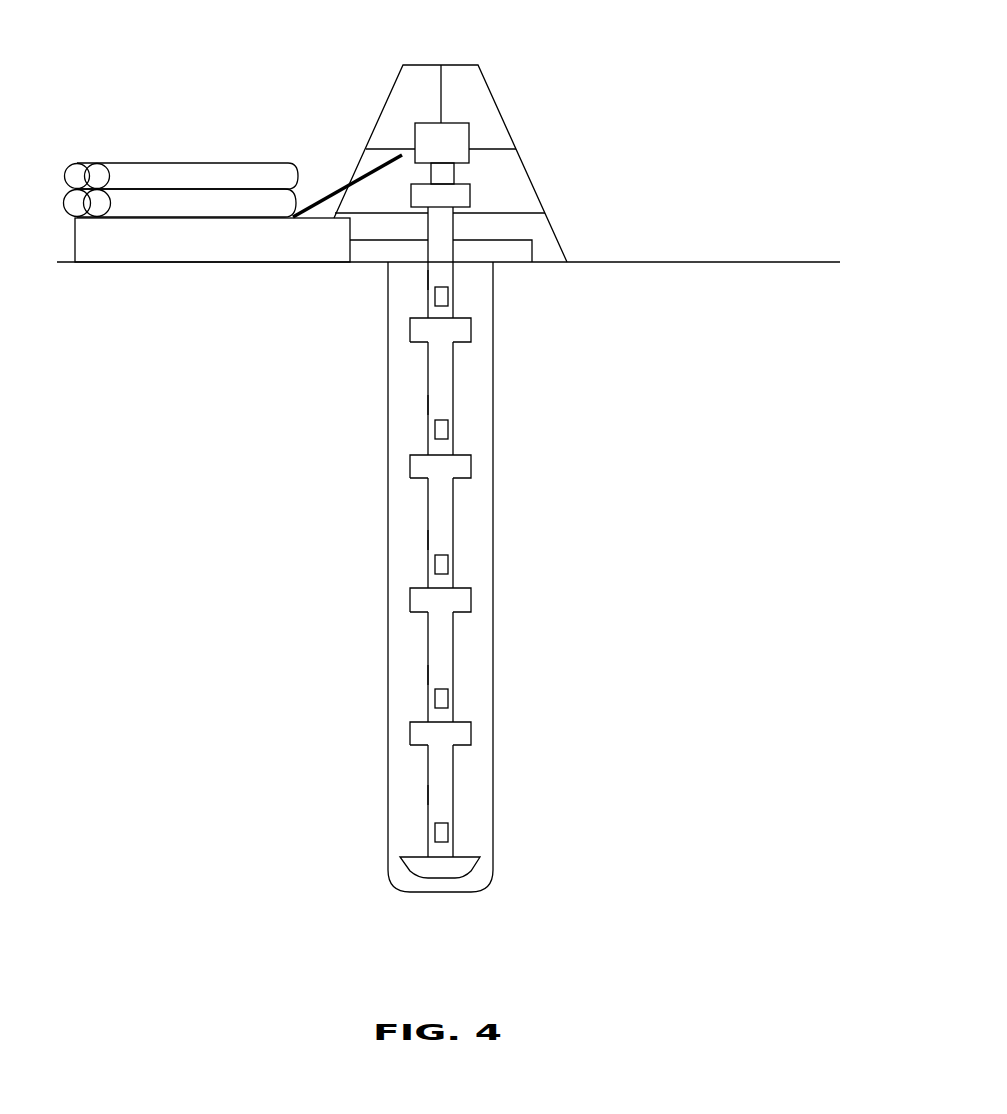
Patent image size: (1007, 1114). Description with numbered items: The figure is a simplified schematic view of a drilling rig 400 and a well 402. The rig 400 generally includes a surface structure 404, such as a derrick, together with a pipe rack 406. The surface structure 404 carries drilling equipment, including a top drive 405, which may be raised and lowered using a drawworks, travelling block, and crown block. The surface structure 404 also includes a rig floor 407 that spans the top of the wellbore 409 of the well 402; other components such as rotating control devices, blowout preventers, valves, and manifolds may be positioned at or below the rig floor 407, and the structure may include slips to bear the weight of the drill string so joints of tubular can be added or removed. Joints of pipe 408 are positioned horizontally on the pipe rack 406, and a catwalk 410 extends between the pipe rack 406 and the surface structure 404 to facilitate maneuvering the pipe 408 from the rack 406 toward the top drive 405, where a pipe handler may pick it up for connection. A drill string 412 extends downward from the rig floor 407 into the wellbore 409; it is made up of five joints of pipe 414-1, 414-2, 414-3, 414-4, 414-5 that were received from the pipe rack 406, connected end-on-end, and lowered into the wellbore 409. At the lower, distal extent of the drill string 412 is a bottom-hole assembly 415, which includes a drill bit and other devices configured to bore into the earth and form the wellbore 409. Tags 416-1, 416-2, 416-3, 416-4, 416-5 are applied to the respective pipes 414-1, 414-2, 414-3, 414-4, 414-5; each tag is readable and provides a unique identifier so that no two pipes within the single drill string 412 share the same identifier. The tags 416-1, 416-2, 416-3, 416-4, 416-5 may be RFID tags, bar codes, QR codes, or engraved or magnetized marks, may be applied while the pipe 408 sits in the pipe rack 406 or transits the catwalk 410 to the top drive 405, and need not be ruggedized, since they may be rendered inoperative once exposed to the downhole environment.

The drilling rig 400 is at (748, 110).
The well 402 is at (588, 578).
The surface structure 404 is at (520, 92).
The top drive 405 is at (457, 137).
The pipe rack 406 is at (105, 253).
The rig floor 407 is at (513, 248).
The pipe 408 is at (128, 168).
The wellbore 409 is at (495, 370).
The catwalk 410 is at (325, 177).
The drill string 412 is at (435, 355).
The joint of pipe 414-1 is at (437, 278).
The joint of pipe 414-2 is at (437, 402).
The joint of pipe 414-3 is at (438, 542).
The joint of pipe 414-4 is at (438, 675).
The joint of pipe 414-5 is at (438, 797).
The bottom-hole assembly 415 is at (462, 865).
The tag 416-1 is at (450, 288).
The tag 416-2 is at (453, 418).
The tag 416-3 is at (448, 565).
The tag 416-4 is at (448, 700).
The tag 416-5 is at (448, 827).